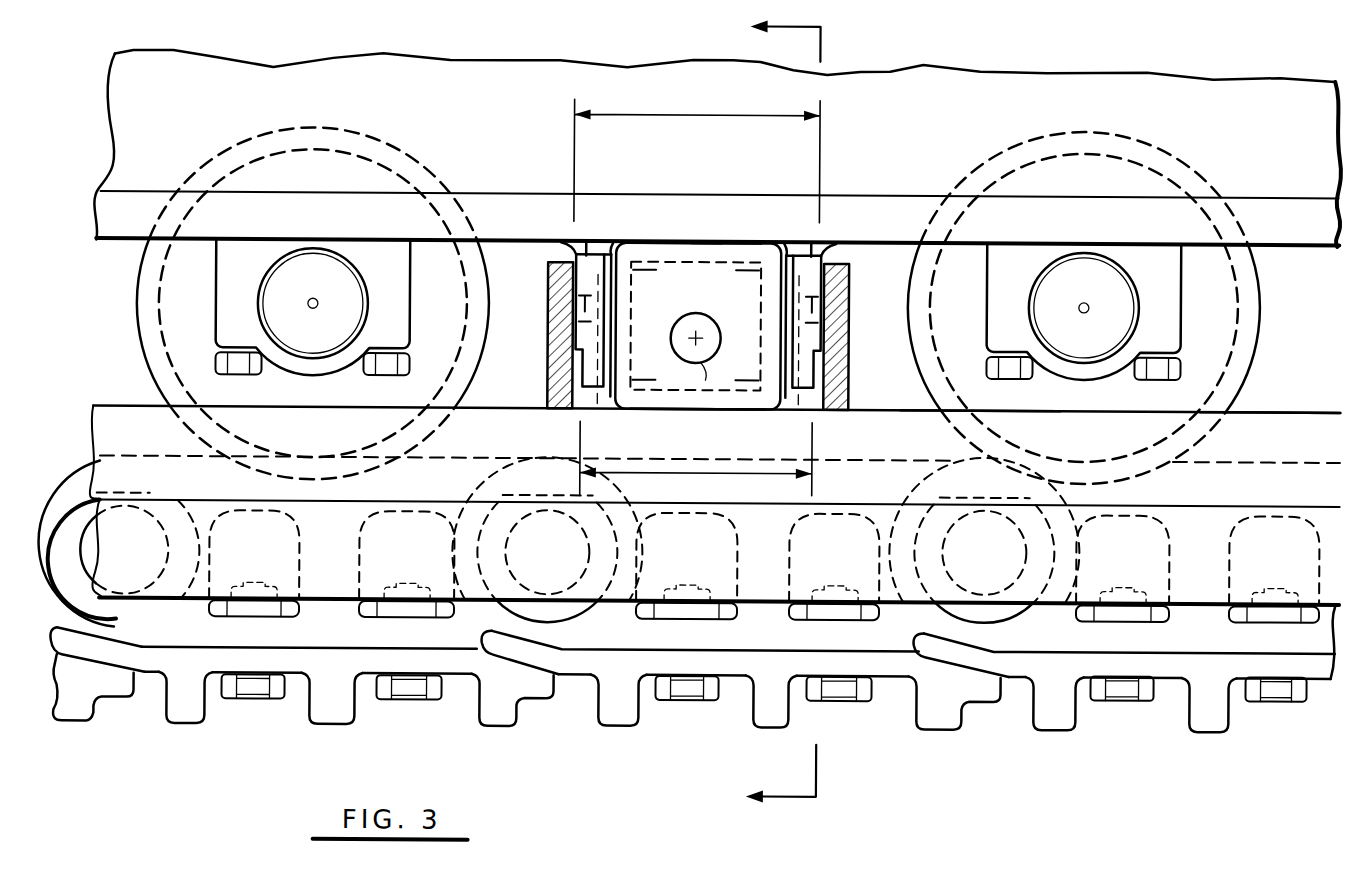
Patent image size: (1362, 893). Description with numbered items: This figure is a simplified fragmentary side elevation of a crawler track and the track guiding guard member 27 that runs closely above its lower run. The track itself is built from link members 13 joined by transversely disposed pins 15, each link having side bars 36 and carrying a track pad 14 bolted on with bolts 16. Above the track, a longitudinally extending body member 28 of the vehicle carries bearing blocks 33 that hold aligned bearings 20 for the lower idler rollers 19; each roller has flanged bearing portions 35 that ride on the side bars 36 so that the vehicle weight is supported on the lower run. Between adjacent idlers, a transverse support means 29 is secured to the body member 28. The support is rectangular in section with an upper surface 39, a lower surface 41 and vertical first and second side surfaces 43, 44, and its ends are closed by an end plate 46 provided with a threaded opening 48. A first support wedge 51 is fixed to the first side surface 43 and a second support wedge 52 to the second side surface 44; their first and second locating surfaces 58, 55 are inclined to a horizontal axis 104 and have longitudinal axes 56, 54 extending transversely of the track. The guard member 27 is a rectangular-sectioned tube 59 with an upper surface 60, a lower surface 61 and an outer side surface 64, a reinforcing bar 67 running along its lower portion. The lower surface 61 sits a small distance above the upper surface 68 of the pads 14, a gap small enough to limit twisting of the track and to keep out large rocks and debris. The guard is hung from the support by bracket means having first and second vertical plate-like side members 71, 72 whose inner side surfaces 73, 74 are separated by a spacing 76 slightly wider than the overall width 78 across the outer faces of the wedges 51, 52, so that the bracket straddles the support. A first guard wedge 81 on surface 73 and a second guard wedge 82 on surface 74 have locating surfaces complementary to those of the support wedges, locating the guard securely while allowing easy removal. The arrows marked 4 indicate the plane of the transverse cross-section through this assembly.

The section line 4- 4 is at (764, 413).
The link member 13 is at (78, 450).
The track pad 14 is at (181, 710).
The pin 15 is at (83, 536).
The bolt 16 is at (410, 578).
The lower idler roller 19 is at (176, 297).
The bearing 20 is at (338, 288).
The track guiding guard member 27 is at (1258, 406).
The body member 28 is at (1292, 250).
The transverse support means 29 is at (704, 232).
The bearing block 33 is at (300, 381).
The flanged bearing portion 35 is at (160, 275).
The side bar 36 is at (146, 450).
The support upper surface 39 is at (728, 243).
The support lower surface 41 is at (688, 409).
The first support side surface 43 is at (583, 250).
The second support side surface 44 is at (814, 251).
The end plate 46 is at (676, 243).
The threaded opening 48 is at (702, 326).
The first support wedge 51 is at (624, 356).
The second support wedge 52 is at (783, 378).
The longitudinal axis 54 is at (842, 360).
The second locating surface 55 is at (838, 320).
The longitudinal axis 56 is at (576, 300).
The first locating surface 58 is at (580, 320).
The rectangular sectioned tube 59 is at (1270, 412).
The upper surface 60 is at (1002, 410).
The lower surface 61 is at (325, 615).
The outer side surface 64 is at (1278, 432).
The outer reinforcing bar 67 is at (1180, 523).
The upper surface 68 is at (783, 648).
The first bracket side member 71 is at (556, 370).
The second bracket side member 72 is at (838, 382).
The first guard bracket inner side surface 73 is at (566, 265).
The second guard bracket inner side surface 74 is at (834, 265).
The spacing 76 is at (707, 112).
The overall width 78 is at (692, 475).
The first guard wedge 81 is at (624, 282).
The second guard wedge 82 is at (780, 282).
The axis 104 is at (707, 360).